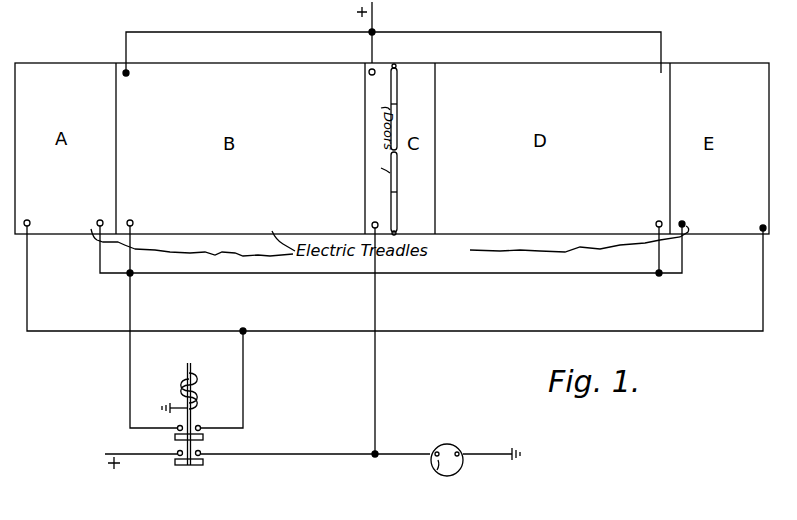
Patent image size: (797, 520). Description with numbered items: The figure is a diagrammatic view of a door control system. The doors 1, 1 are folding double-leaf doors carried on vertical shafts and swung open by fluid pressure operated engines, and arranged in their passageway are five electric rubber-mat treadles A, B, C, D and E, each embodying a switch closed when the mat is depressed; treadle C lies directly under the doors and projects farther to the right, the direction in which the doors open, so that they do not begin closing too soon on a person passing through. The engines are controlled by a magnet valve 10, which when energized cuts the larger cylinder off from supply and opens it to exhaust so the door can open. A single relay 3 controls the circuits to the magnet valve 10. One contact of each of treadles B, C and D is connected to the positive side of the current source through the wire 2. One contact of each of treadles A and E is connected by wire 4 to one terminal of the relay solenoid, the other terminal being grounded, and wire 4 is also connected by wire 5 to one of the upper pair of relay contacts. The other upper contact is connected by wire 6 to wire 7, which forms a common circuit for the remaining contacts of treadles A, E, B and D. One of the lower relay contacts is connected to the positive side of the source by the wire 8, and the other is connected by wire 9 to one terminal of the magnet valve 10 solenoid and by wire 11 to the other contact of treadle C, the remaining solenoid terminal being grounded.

The doors 1 is at (398, 118).
The wire 2 is at (374, 18).
The relay 3 is at (187, 414).
The wire 4 is at (331, 330).
The wire 5 is at (245, 385).
The wire 6 is at (129, 386).
The wire 7 is at (286, 277).
The wire 8 is at (150, 457).
The wire 9 is at (328, 456).
The magnet valve 10 is at (451, 447).
The wire 11 is at (378, 384).